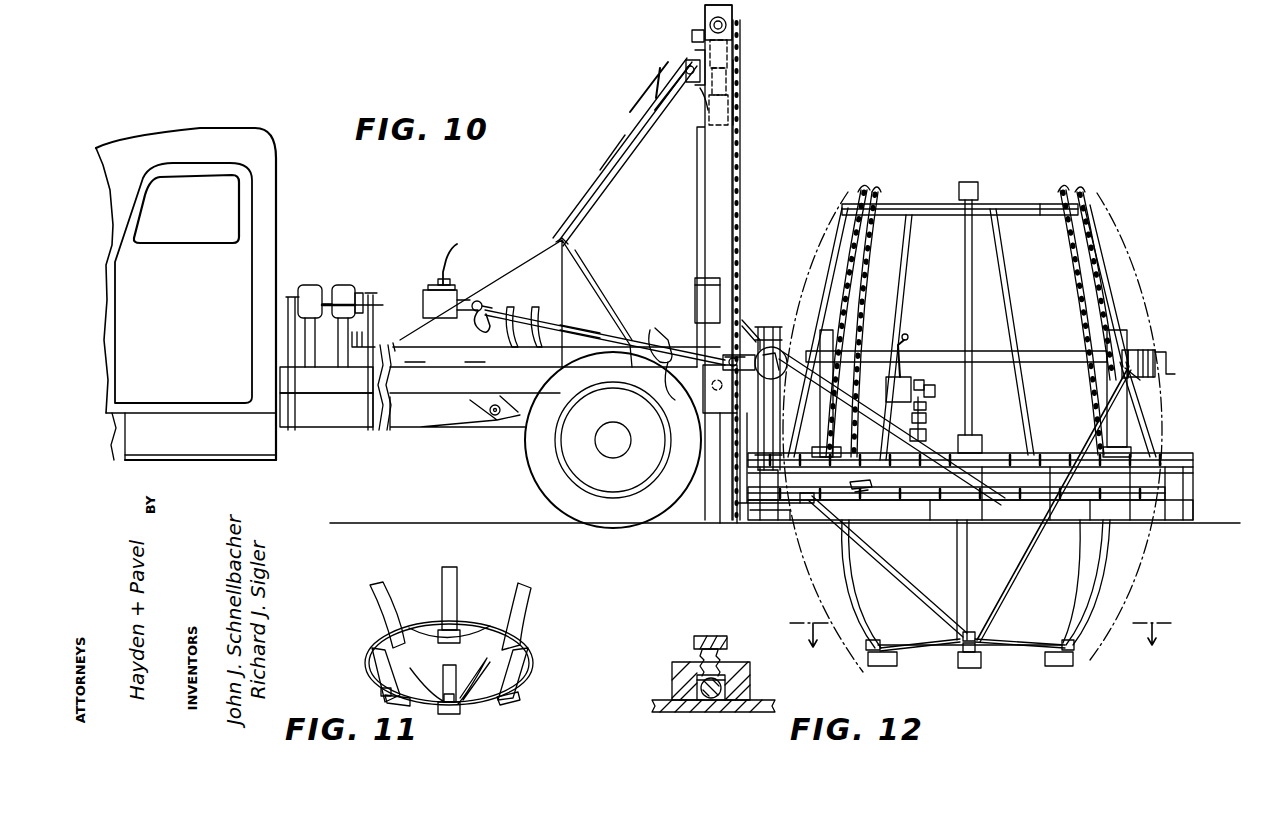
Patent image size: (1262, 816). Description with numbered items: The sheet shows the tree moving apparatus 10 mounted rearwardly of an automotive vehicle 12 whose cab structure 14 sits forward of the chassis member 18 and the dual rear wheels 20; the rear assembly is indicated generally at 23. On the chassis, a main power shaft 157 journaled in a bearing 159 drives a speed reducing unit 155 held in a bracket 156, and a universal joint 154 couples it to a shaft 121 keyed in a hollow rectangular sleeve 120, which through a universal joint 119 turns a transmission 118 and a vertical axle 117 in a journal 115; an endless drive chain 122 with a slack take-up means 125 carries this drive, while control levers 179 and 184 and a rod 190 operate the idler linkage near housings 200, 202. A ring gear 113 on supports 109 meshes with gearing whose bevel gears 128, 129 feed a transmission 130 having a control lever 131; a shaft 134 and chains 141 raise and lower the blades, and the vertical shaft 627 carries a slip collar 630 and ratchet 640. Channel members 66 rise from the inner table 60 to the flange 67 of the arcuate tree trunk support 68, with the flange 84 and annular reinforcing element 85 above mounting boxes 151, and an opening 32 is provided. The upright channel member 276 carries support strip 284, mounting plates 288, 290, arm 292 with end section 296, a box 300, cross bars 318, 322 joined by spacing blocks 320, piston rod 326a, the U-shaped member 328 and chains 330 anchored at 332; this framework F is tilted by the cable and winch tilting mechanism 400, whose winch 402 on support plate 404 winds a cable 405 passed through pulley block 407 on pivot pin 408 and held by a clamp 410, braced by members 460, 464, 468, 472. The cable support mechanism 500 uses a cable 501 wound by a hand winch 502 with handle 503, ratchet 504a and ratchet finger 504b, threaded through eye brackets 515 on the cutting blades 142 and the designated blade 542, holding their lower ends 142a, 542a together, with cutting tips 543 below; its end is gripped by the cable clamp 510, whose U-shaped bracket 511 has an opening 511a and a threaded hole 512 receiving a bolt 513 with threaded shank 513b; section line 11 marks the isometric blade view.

In FIG. 10, the tree moving apparatus 10 is at (714, 536).
In FIG. 10, the section line 11— 11 is at (981, 652).
In FIG. 10, the automotive vehicle 12 is at (350, 434).
In FIG. 10, the cab structure 14 is at (205, 130).
In FIG. 10, the main frame chassis member 18 is at (393, 433).
In FIG. 10, the dual rear wheels 20 is at (519, 490).
In FIG. 10, the pole handling assembly 23 is at (1120, 185).
In FIG. 10, the opening 32 is at (1192, 501).
In FIG. 10, the inner table 60 is at (872, 506).
In FIG. 12, the inner table 60 is at (652, 704).
In FIG. 10, the channel members 66 is at (1012, 268).
In FIG. 10, the flange 67 is at (1012, 204).
In FIG. 10, the arcuate tree trunk support 68 is at (1040, 216).
In FIG. 10, the flange 84 is at (1035, 364).
In FIG. 10, the annular reinforcing element 85 is at (1015, 352).
In FIG. 10, the supports 109 is at (1193, 476).
In FIG. 10, the ring gear 113 is at (1192, 453).
In FIG. 10, the journal 115 is at (782, 422).
In FIG. 10, the vertical axle 117 is at (745, 386).
In FIG. 10, the transmission 118 is at (768, 346).
In FIG. 10, the universal joint 119 is at (730, 355).
In FIG. 10, the hollow rectangular sleeve 120 is at (668, 372).
In FIG. 10, the shaft 121 is at (585, 334).
In FIG. 10, the endless drive chain 122 is at (1055, 517).
In FIG. 10, the chain slack take-up means 125 is at (860, 519).
In FIG. 10, the bevel gear 128 is at (936, 378).
In FIG. 10, the second bevel gear 129 is at (918, 374).
In FIG. 10, the transmission 130 is at (882, 377).
In FIG. 10, the control lever 131 is at (903, 340).
In FIG. 10, the shaft 134 is at (862, 481).
In FIG. 10, the endless chains 141 is at (866, 224).
In FIG. 10, the cutting blades 142 is at (1112, 590).
In FIG. 11, the cutting blades 142 is at (538, 592).
In FIG. 10, the lower ends of blades 142a is at (877, 625).
In FIG. 10, the mounting boxes 151 is at (985, 521).
In FIG. 10, the universal joint 154 is at (483, 300).
In FIG. 10, the speed reducing unit 155 is at (450, 290).
In FIG. 10, the bracket 156 is at (425, 293).
In FIG. 10, the main power shaft 157 is at (375, 293).
In FIG. 10, the bearing 159 is at (305, 285).
In FIG. 10, the control lever 179 is at (522, 300).
In FIG. 10, the manually operable control lever 184 is at (542, 313).
In FIG. 10, the rod 190 is at (425, 332).
In FIG. 10, the housing 200 is at (360, 378).
In FIG. 10, the housing 202 is at (298, 408).
In FIG. 10, the upright channel member 276 is at (720, 162).
In FIG. 10, the L-shaped support strip 284 is at (725, 506).
In FIG. 10, the first rectangular mounting plate 288 is at (742, 522).
In FIG. 10, the second mounting plate 290 is at (748, 320).
In FIG. 10, the mounting arm 292 is at (818, 385).
In FIG. 10, the inwardly bent end section 296 is at (950, 492).
In FIG. 10, the mast box 300 is at (722, 287).
In FIG. 10, the cross bar 318 is at (740, 42).
In FIG. 10, the spacing blocks 320 is at (725, 52).
In FIG. 10, the second sliding cross bar 322 is at (740, 74).
In FIG. 10, the piston rod 326a is at (740, 112).
In FIG. 10, the U-shaped structural member 328 is at (697, 96).
In FIG. 10, the link chains 330 is at (752, 94).
In FIG. 10, the chain attachment point 332 is at (692, 36).
In FIG. 10, the cable and winch tilting mechanism 400 is at (611, 156).
In FIG. 10, the winch 402 is at (462, 368).
In FIG. 10, the support plate 404 is at (490, 369).
In FIG. 10, the cable 405 is at (620, 181).
In FIG. 10, the pulley block 407 is at (686, 76).
In FIG. 10, the pivot pin 408 is at (693, 60).
In FIG. 10, the clamp 410 is at (488, 310).
In FIG. 10, the upright structural member 460 is at (578, 264).
In FIG. 10, the reinforcing structural members 464 is at (550, 234).
In FIG. 10, the second reinforcing structural members 468 is at (627, 292).
In FIG. 10, the shorter upright members 472 is at (660, 335).
In FIG. 10, the cable support mechanism 500 is at (1032, 659).
In FIG. 11, the cable support mechanism 500 is at (543, 680).
In FIG. 10, the cable 501 is at (1033, 556).
In FIG. 11, the cable 501 is at (466, 622).
In FIG. 12, the cable 501 is at (712, 706).
In FIG. 10, the winch 502 is at (1170, 350).
In FIG. 10, the handle 503 is at (1176, 372).
In FIG. 10, the ratchet 504a is at (1150, 380).
In FIG. 10, the ratchet finger 504b is at (1145, 350).
In FIG. 10, the cable clamp 510 is at (808, 520).
In FIG. 12, the cable clamp 510 is at (663, 668).
In FIG. 12, the U-shaped bracket 511 is at (752, 670).
In FIG. 12, the opening 511a is at (697, 684).
In FIG. 12, the threaded hole 512 is at (720, 672).
In FIG. 12, the bolt 513 is at (711, 636).
In FIG. 12, the threaded shank 513b is at (700, 650).
In FIG. 10, the eye brackets 515 is at (960, 636).
In FIG. 11, the eye brackets 515 is at (380, 694).
In FIG. 10, the blade 542 is at (957, 561).
In FIG. 10, the lower end of blade 542a is at (955, 650).
In FIG. 10, the cutting tips 543 is at (878, 668).
In FIG. 11, the cutting tips 543 is at (440, 638).
In FIG. 10, the vertical shaft 627 is at (927, 392).
In FIG. 10, the slip collar 630 is at (924, 414).
In FIG. 10, the ratchet 640 is at (926, 434).
In FIG. 10, the framework F is at (756, 192).